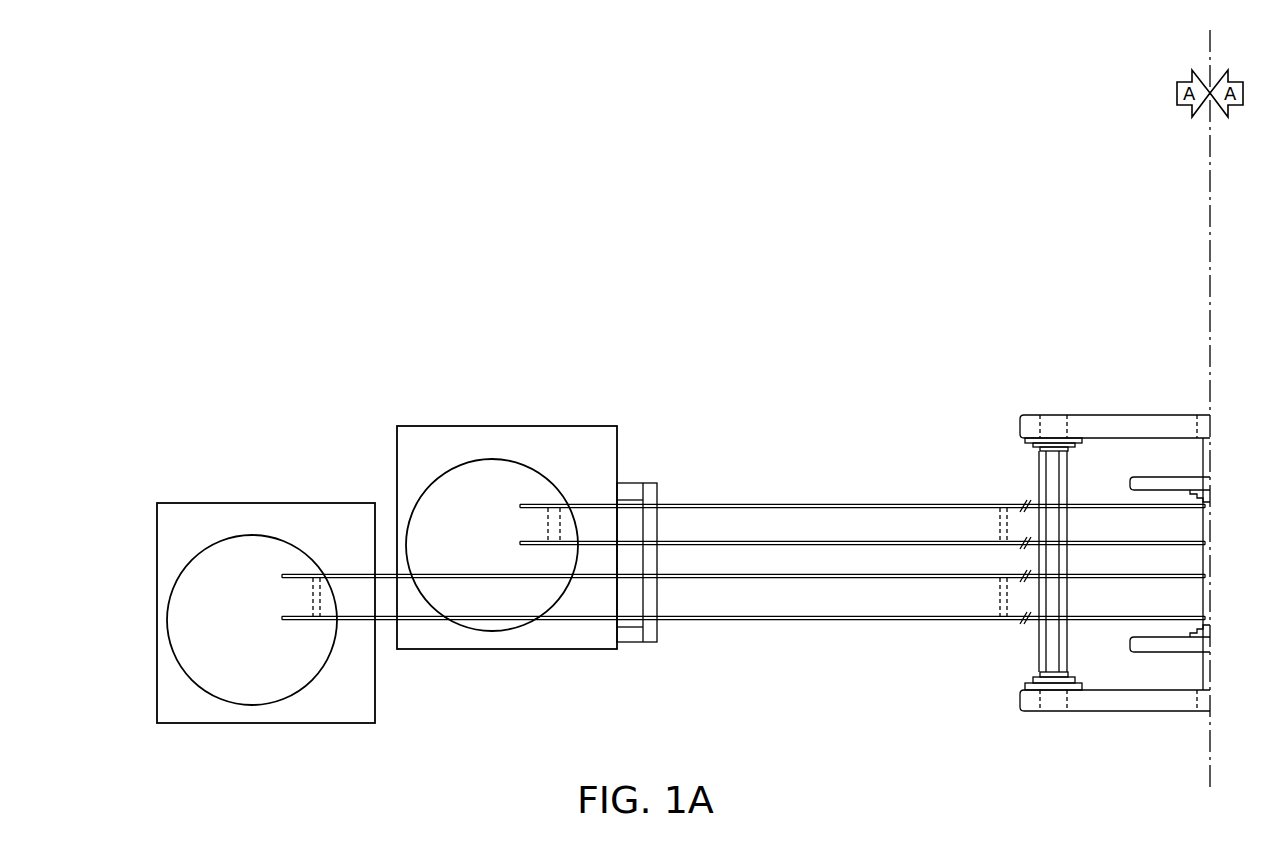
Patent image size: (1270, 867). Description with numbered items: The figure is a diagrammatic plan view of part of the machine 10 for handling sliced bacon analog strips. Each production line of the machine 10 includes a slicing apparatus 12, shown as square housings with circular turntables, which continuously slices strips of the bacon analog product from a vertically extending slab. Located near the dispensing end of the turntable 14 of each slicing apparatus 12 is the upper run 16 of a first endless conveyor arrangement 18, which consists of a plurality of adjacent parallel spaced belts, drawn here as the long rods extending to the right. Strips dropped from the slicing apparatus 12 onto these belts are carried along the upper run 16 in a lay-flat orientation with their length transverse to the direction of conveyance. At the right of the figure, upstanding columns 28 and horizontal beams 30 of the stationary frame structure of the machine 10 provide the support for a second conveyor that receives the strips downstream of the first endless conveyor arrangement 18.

The machine 10 is at (1129, 415).
The slicing apparatus 12 is at (255, 503).
The turntable 14 is at (277, 703).
The upper run 16 is at (731, 504).
The first endless conveyor arrangement 18 is at (853, 504).
The upstanding columns 28 is at (1034, 656).
The horizontal beams 30 is at (1077, 415).